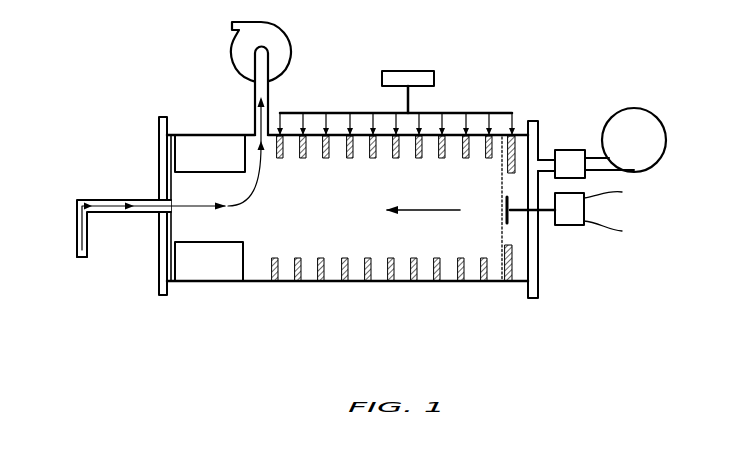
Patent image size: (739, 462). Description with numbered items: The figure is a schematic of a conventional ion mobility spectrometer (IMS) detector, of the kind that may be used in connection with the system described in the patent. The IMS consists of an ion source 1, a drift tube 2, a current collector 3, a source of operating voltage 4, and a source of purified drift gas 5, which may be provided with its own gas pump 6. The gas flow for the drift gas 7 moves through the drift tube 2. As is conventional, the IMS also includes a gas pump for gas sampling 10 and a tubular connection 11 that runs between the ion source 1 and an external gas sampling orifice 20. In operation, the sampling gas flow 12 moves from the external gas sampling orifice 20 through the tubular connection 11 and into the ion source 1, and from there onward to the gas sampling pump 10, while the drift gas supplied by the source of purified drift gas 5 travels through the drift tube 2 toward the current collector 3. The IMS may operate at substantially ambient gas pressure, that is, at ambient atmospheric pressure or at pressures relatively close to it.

The ion source 1 is at (220, 183).
The drift tube 2 is at (428, 243).
The current collector 3 is at (523, 215).
The source of operating voltage 4 is at (412, 68).
The source of purified drift gas 5 is at (563, 147).
The gas pump 6 is at (625, 132).
The gas flow for the drift gas 7 is at (427, 212).
The gas pump for gas sampling 10 is at (275, 45).
The tubular connection 11 is at (120, 198).
The sampling gas flow 12 is at (183, 213).
The external gas sampling orifice 20 is at (78, 258).